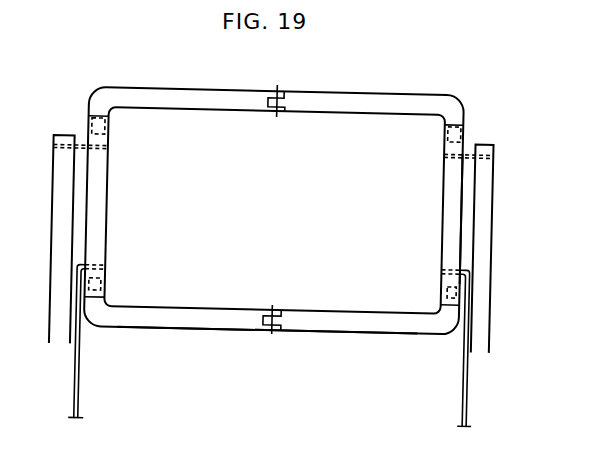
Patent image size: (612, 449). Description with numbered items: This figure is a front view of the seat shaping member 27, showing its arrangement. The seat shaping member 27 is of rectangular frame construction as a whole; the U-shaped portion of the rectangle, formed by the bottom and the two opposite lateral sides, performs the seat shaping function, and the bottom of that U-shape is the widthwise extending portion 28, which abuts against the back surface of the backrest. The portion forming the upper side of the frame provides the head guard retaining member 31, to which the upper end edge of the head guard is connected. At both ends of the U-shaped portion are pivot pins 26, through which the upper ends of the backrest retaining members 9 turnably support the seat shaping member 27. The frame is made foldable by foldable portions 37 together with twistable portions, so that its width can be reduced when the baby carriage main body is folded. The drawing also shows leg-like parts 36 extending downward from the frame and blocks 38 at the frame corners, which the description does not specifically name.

The backrest retaining member 9 is at (52, 232).
The pivot pin 26 is at (83, 147).
The seat shaping member 27 is at (450, 233).
The widthwise extending portion 28 is at (332, 324).
The head guard retaining member 31 is at (378, 98).
The leg 36 is at (80, 384).
The foldable portion 37 is at (282, 91).
The fastening block 38 is at (97, 116).